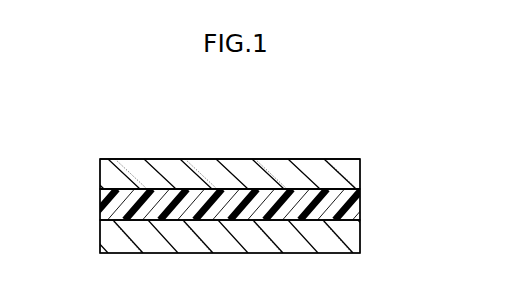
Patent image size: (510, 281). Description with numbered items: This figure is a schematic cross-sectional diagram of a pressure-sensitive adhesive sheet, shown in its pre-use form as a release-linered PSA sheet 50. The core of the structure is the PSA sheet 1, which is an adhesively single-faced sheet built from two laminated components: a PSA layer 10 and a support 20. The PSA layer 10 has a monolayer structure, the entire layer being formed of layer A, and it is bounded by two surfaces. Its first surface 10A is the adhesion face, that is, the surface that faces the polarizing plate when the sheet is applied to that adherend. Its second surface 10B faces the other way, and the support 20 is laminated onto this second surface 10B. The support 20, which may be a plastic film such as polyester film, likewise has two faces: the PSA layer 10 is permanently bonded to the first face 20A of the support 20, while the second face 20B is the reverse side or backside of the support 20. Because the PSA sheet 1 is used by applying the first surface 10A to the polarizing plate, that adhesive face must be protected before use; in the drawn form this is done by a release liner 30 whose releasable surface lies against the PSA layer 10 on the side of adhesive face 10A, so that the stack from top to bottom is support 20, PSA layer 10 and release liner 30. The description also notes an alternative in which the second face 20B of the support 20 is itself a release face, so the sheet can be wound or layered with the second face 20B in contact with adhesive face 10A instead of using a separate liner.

The release-linered PSA sheet 50 is at (347, 113).
The PSA sheet 1 is at (448, 148).
The PSA layer 10 is at (362, 197).
The support 20 is at (362, 169).
The release liner 30 is at (362, 232).
The second face of support 20B is at (107, 156).
The first face of support 20A is at (123, 191).
The second surface of PSA layer 10B is at (122, 189).
The first surface of PSA layer 10A is at (127, 222).